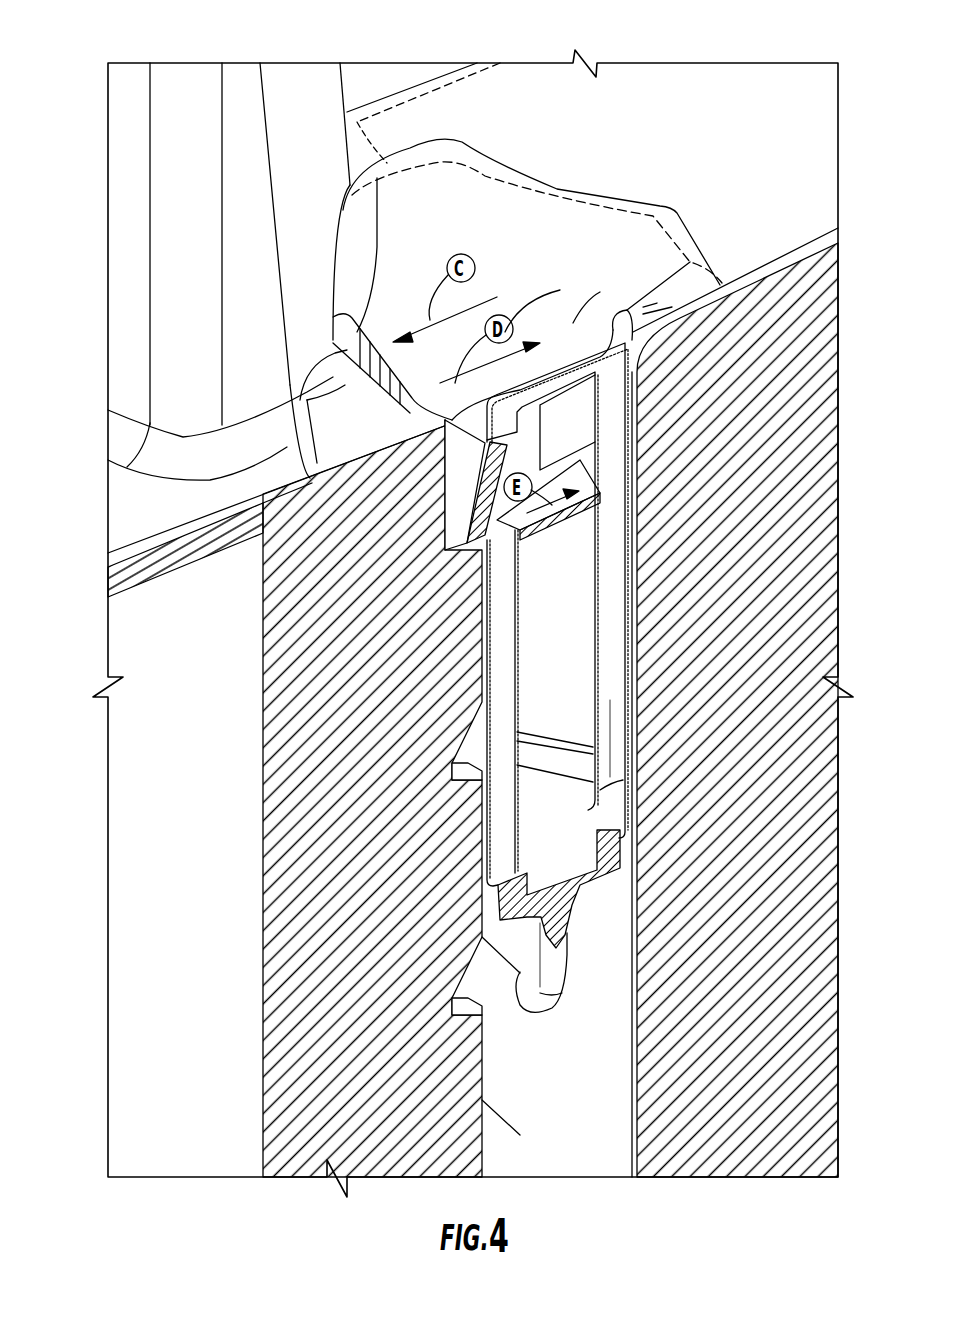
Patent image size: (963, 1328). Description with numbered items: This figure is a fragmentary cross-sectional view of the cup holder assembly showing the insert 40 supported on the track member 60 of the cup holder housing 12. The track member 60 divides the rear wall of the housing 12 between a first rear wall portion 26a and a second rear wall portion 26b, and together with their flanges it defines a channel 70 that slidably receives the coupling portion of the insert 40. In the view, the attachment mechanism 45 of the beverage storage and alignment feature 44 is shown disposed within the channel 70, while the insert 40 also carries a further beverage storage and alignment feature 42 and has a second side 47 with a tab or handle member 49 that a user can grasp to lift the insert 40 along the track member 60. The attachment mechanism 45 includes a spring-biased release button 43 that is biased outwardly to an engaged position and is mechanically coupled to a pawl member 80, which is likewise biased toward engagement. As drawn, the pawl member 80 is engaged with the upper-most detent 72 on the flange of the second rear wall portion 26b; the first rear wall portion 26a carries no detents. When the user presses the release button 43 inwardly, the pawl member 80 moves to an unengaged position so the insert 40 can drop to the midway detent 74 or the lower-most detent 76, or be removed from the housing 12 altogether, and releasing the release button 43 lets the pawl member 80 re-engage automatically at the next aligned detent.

The cup holder housing 12 is at (132, 655).
The first rear wall portion 26a is at (786, 488).
The second rear wall portion 26b is at (150, 790).
The insert 40 is at (517, 98).
The beverage storage and alignment feature 42 is at (153, 258).
The release button 43 is at (323, 440).
The beverage storage and alignment feature 44 is at (500, 193).
The attachment mechanism 45 is at (573, 323).
The second side 47 is at (723, 165).
The handle member 49 is at (525, 975).
The track member 60 is at (633, 1078).
The channel 70 is at (592, 1150).
The detent 72 is at (488, 555).
The detent 74 is at (460, 772).
The detent 76 is at (460, 1005).
The pawl member 80 is at (462, 512).